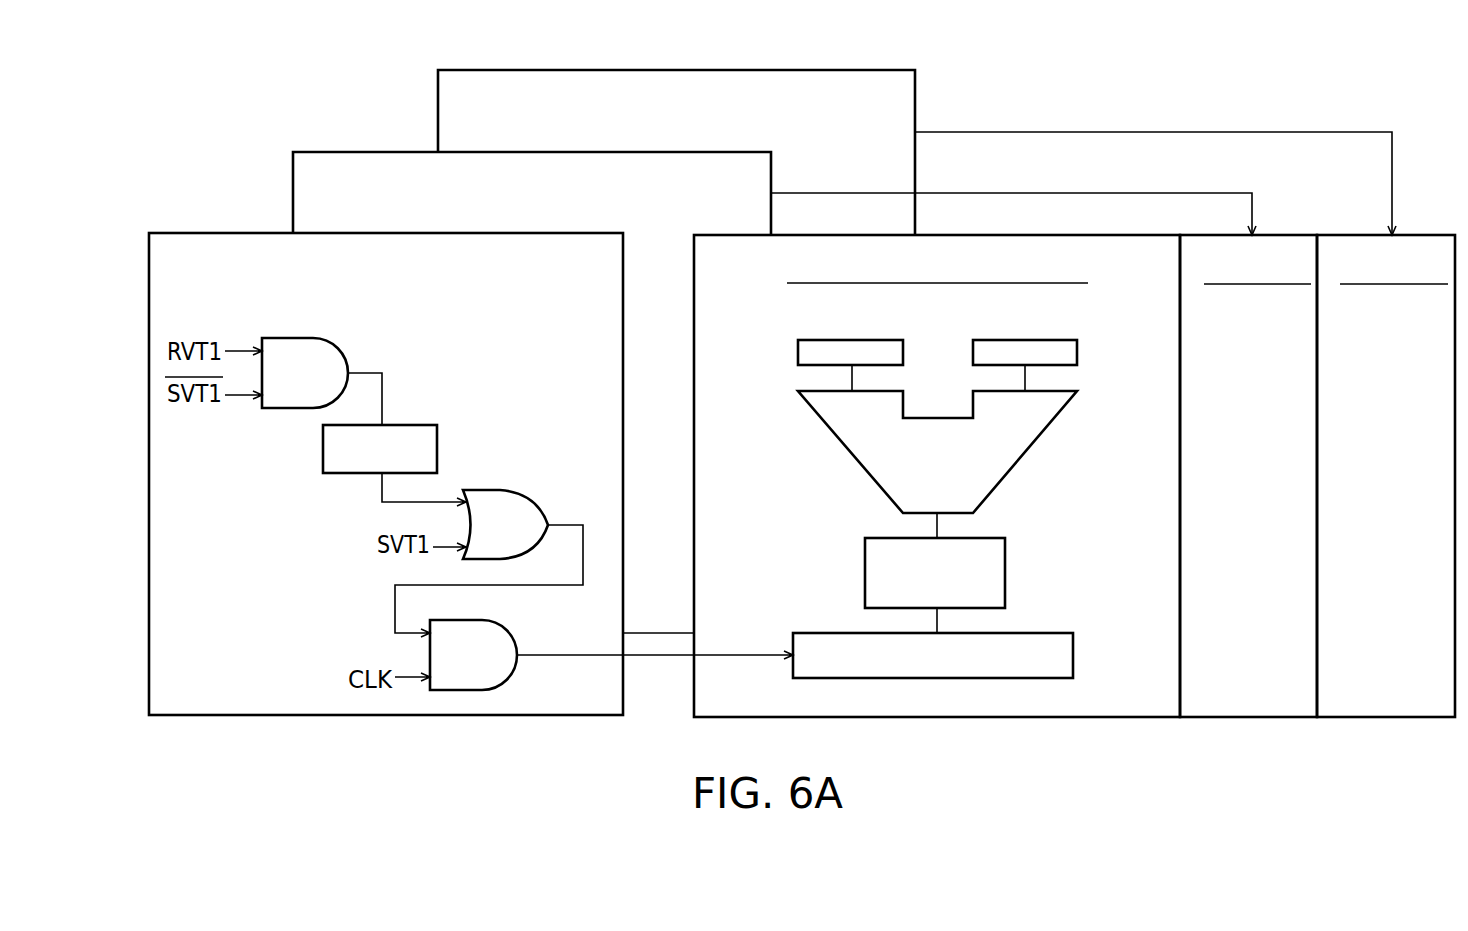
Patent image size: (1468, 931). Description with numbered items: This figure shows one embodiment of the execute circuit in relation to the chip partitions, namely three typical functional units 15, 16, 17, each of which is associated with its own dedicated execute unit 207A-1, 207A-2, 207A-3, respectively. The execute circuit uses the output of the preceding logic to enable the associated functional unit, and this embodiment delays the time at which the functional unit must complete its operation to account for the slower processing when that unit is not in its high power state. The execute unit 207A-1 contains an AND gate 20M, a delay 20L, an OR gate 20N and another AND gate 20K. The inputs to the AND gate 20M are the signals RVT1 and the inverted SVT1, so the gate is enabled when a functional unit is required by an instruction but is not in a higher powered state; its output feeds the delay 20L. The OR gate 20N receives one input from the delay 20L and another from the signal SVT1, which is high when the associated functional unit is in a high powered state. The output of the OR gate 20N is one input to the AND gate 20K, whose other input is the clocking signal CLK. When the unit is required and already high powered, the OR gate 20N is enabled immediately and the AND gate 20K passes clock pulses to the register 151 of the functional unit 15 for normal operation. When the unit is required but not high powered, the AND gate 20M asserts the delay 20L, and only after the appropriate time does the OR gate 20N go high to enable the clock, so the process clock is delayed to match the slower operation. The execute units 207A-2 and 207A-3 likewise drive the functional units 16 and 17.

The execute unit 207A-1 is at (598, 283).
The execute unit 207A-2 is at (743, 200).
The execute unit 207A-3 is at (891, 119).
The AND gate 20M is at (332, 345).
The delay 20L is at (340, 473).
The OR gate 20N is at (510, 507).
The AND gate 20K is at (500, 632).
The register 151 is at (1043, 633).
The functional unit 15 is at (937, 539).
The functional unit 16 is at (1223, 717).
The functional unit 17 is at (1373, 717).